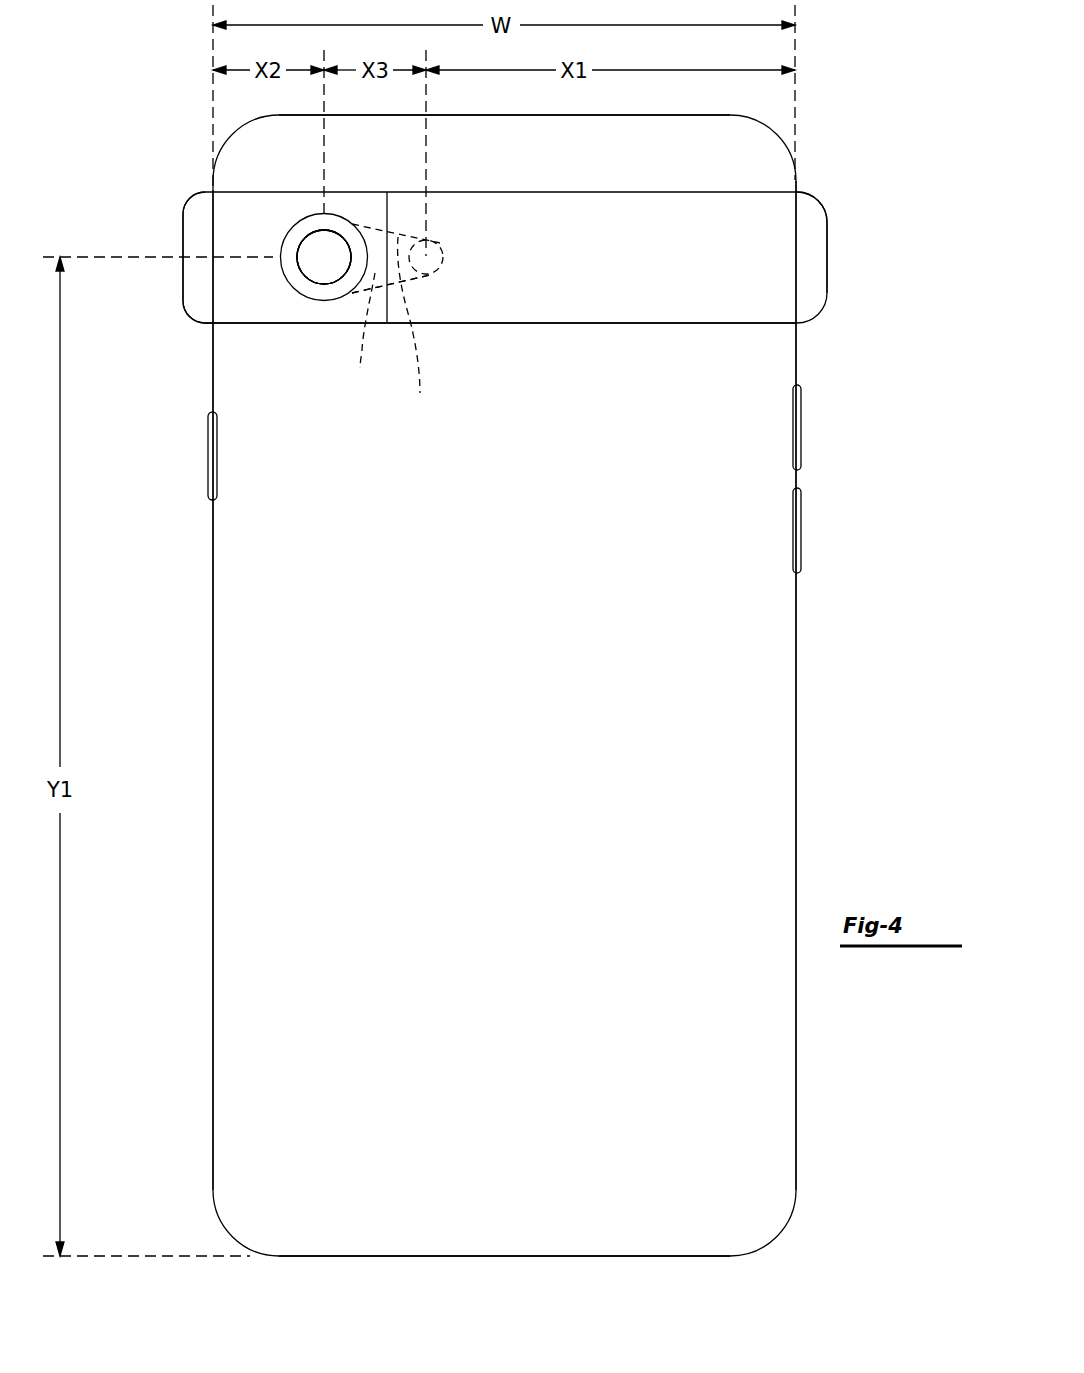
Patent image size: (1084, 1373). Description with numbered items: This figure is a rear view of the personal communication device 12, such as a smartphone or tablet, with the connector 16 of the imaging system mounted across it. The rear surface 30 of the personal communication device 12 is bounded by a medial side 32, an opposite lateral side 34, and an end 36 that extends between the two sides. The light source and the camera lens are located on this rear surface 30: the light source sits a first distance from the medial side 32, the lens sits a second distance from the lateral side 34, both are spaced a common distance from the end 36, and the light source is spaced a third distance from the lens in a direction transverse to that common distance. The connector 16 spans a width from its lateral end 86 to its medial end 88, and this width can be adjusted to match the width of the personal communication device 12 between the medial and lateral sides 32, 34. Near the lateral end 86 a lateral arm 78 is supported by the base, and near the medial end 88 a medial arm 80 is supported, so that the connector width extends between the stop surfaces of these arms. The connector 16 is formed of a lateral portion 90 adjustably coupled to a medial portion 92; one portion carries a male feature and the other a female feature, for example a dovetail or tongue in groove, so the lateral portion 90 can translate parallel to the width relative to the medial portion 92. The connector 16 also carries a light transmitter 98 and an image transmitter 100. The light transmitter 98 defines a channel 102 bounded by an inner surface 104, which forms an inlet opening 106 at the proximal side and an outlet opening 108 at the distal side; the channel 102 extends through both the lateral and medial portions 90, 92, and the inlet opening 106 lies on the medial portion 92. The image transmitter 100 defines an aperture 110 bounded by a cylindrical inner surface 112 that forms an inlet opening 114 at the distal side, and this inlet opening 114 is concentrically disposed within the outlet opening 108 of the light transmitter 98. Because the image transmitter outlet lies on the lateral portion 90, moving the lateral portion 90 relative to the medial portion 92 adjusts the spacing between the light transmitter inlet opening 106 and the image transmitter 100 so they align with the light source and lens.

The personal communication device 12 is at (242, 880).
The connector 16 is at (682, 347).
The rear surface 30 is at (502, 775).
The medial side 32 is at (796, 685).
The lateral side 34 is at (213, 630).
The end 36 is at (675, 1256).
The lateral arm 78 is at (182, 240).
The medial arm 80 is at (827, 275).
The lateral end 86 is at (213, 225).
The medial end 88 is at (797, 225).
The lateral portion 90 is at (243, 325).
The medial portion 92 is at (487, 323).
The light transmitter 98 is at (425, 290).
The image transmitter 100 is at (283, 273).
The channel 102 is at (363, 334).
The inner surface 104 is at (418, 335).
The inlet opening 106 is at (442, 250).
The outlet opening 108 is at (295, 228).
The aperture 110 is at (317, 263).
The inner surface 112 is at (325, 280).
The inlet opening 114 is at (341, 236).